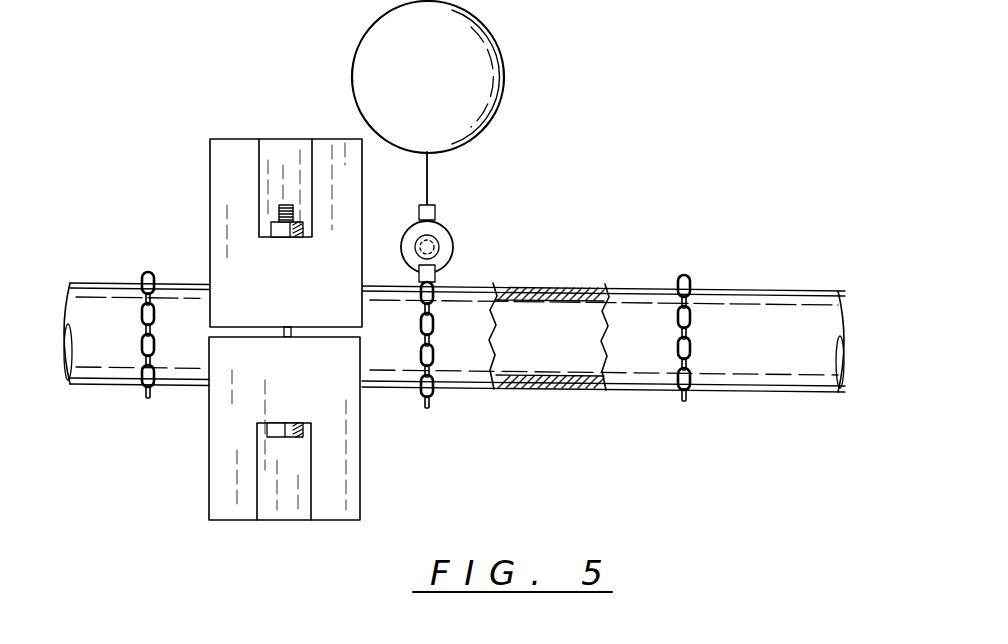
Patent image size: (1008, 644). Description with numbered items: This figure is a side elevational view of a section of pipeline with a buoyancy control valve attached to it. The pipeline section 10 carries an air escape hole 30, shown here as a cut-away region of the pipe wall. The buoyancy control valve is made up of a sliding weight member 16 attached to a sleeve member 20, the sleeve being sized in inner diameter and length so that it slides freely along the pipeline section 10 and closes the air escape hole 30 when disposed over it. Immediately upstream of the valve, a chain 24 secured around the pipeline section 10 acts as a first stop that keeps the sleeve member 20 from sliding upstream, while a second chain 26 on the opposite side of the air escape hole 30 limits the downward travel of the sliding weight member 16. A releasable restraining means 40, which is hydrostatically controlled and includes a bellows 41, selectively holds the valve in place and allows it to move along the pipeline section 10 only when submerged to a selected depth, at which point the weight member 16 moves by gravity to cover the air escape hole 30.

The pipeline section 10 is at (781, 290).
The sliding weight member 16 is at (240, 132).
The sleeve member 20 is at (389, 371).
The chain 24 is at (146, 270).
The chain 26 is at (687, 273).
The air escape hole 30 is at (570, 284).
The releasable restraining means 40 is at (450, 266).
The bellows 41 is at (443, 90).